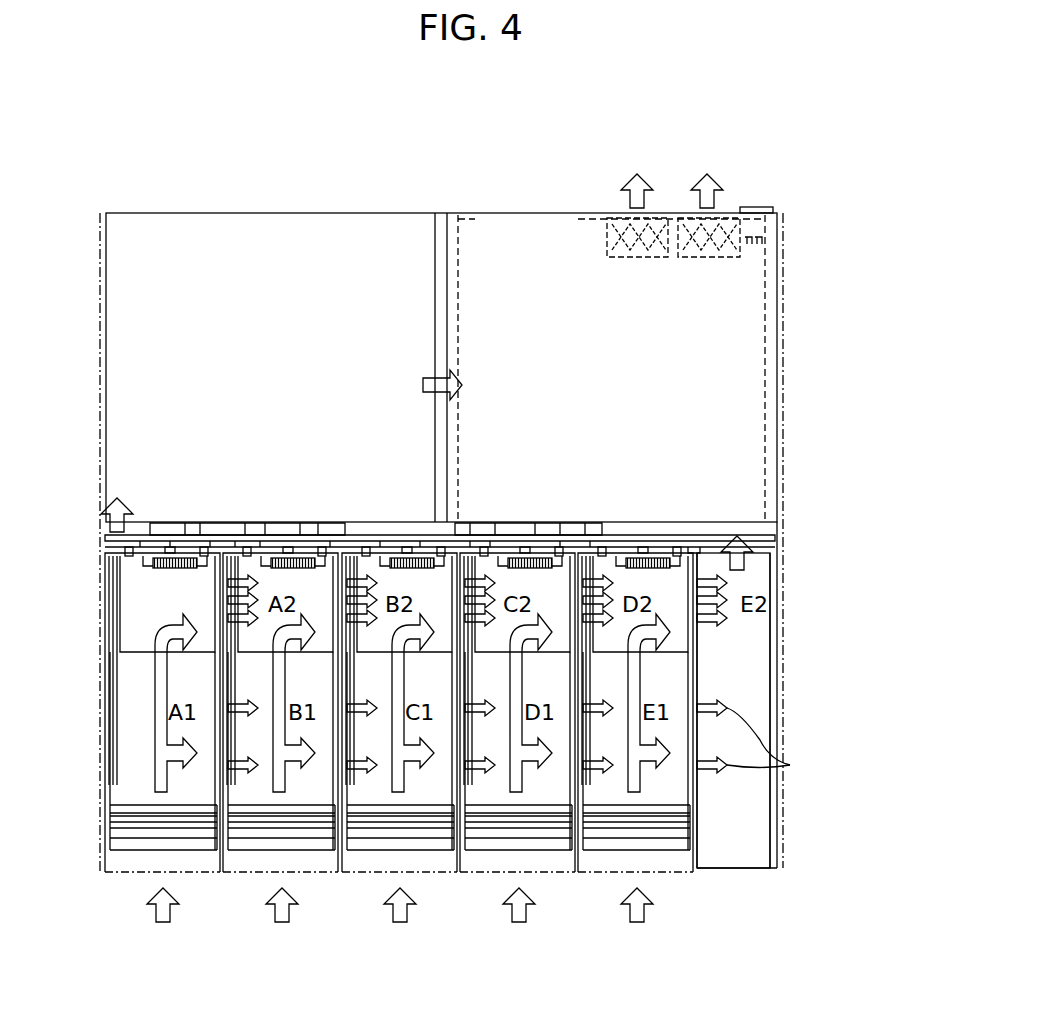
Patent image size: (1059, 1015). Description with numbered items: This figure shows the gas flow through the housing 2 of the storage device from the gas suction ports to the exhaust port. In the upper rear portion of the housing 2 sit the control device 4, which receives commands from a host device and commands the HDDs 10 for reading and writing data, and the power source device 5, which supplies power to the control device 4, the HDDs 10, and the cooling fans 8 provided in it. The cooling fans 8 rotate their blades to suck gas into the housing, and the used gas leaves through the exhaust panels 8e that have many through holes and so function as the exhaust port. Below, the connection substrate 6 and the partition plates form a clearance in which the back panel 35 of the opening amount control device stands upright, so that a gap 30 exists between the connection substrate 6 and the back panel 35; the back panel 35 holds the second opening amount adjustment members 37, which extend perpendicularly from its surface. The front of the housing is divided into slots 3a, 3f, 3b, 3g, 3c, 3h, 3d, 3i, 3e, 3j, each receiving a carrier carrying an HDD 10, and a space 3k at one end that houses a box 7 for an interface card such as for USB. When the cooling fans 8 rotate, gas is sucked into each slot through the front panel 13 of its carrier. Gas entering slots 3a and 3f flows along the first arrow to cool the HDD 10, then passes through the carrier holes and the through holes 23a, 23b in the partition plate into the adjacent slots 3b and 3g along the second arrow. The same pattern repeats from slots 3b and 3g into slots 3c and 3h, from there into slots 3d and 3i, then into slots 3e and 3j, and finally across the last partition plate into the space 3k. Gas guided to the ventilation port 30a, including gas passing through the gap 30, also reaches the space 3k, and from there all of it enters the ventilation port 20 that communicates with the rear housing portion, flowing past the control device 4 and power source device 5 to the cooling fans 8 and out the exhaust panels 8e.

The housing 2 is at (100, 290).
The control device 4 is at (300, 228).
The power source device 5 is at (508, 228).
The cooling fan 8 is at (636, 258).
The exhaust panel 8e is at (665, 217).
The connection substrate 6 is at (250, 536).
The gap 30 is at (336, 546).
The ventilation port 30a is at (697, 538).
The ventilation port 20 is at (752, 535).
The HDD 10 is at (404, 730).
The slot 3a is at (160, 755).
The slot 3f is at (130, 874).
The slot 3b is at (278, 755).
The slot 3g is at (252, 874).
The slot 3c is at (395, 755).
The slot 3h is at (368, 874).
The slot 3d is at (513, 755).
The slot 3i is at (487, 874).
The slot 3e is at (631, 755).
The slot 3j is at (605, 874).
The space 3k is at (718, 874).
The box 7 is at (758, 848).
The back panel 35 is at (182, 566).
The second opening amount adjustment member 37 is at (120, 652).
The through hole 23a is at (712, 592).
The through hole 23b is at (825, 743).
The front panel 13 is at (200, 874).